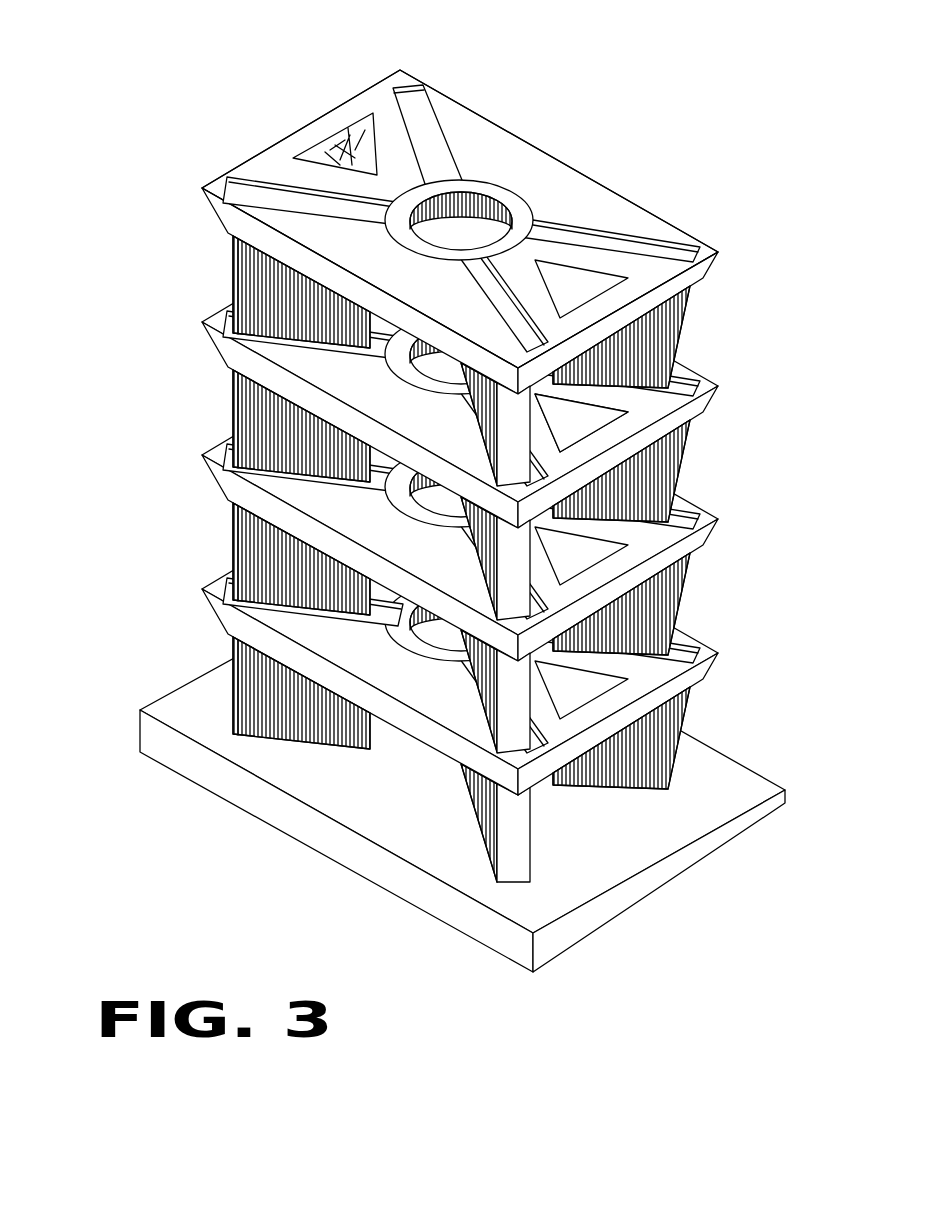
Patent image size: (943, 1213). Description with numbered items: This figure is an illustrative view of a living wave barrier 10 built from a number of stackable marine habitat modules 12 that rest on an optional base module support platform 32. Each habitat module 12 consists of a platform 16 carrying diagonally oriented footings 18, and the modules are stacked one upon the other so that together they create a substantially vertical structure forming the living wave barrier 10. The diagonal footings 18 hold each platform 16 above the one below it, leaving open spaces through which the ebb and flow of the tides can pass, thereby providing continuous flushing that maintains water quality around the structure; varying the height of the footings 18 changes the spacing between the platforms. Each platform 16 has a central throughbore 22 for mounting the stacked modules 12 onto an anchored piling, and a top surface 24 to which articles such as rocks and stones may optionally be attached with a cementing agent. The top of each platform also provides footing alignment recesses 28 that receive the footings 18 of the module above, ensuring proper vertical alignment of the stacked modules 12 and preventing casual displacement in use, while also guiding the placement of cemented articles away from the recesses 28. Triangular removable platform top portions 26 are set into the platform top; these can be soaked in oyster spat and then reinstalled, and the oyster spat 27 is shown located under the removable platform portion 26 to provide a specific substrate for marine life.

The living wave barrier 10 is at (431, 458).
The marine habitat module 12 is at (431, 458).
The platform 16 is at (203, 322).
The footings 18 is at (687, 340).
The platform throughbore 22 is at (474, 193).
The top surface 24 is at (548, 181).
The removable platform top portion 26 is at (345, 153).
The oyster spat 27 is at (372, 115).
The footing alignment recesses 28 is at (270, 197).
The base module support platform 32 is at (642, 833).